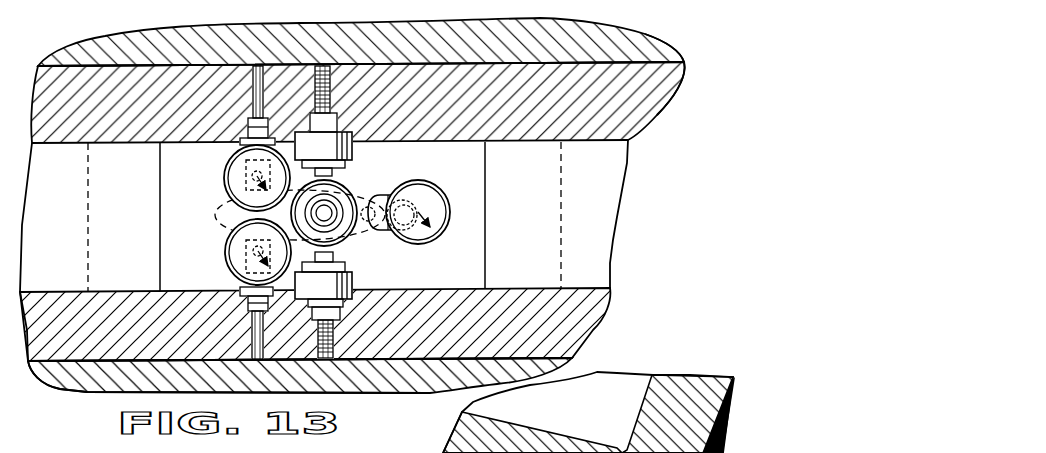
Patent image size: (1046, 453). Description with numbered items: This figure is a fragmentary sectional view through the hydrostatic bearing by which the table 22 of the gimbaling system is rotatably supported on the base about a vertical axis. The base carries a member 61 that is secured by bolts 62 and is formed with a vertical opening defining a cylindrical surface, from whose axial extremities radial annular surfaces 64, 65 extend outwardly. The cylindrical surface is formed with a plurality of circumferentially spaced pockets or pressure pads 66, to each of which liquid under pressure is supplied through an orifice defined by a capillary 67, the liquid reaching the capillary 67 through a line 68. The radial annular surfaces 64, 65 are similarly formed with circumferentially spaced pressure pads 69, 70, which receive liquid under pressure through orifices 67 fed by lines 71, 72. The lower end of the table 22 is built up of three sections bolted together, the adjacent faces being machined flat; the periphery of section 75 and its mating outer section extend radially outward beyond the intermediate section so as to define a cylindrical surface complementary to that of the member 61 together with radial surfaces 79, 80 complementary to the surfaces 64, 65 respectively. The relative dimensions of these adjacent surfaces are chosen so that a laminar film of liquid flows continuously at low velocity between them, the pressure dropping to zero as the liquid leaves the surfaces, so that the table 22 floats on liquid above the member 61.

The table 22 is at (672, 48).
The member 61 is at (627, 116).
The bolts 62 is at (585, 314).
The radial annular surface 64 is at (668, 64).
The radial annular surface 65 is at (566, 357).
The pressure pads 66 is at (221, 223).
The capillary 67 is at (337, 337).
The line 68 is at (331, 211).
The pressure pads 69 is at (386, 66).
The pressure pads 70 is at (377, 361).
The line 71 is at (336, 173).
The line 72 is at (333, 256).
The section 75 is at (428, 378).
The radial surface 79 is at (588, 61).
The radial surface 80 is at (92, 363).